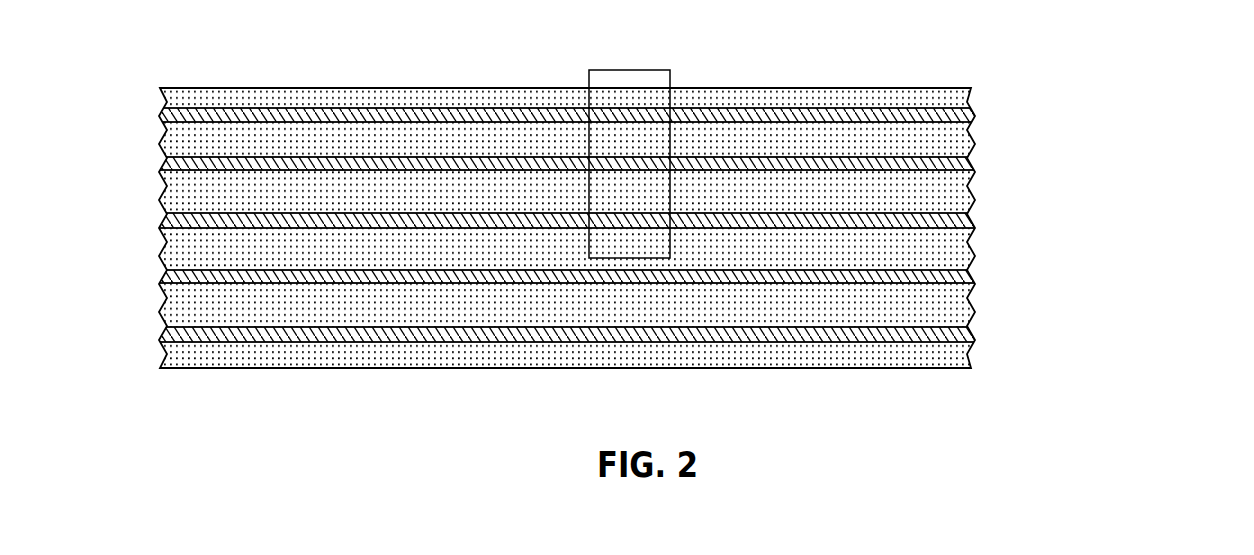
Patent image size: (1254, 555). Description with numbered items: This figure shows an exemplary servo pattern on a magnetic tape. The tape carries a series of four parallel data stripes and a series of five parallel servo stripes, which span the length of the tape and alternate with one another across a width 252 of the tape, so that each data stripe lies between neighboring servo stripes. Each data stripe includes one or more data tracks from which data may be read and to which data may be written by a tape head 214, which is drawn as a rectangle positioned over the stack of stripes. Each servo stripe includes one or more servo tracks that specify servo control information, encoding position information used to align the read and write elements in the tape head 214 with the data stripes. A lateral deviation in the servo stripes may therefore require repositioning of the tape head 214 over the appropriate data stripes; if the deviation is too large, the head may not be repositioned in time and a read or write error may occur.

The tape head 214 is at (627, 70).
The width of the tape 252 is at (1158, 88).